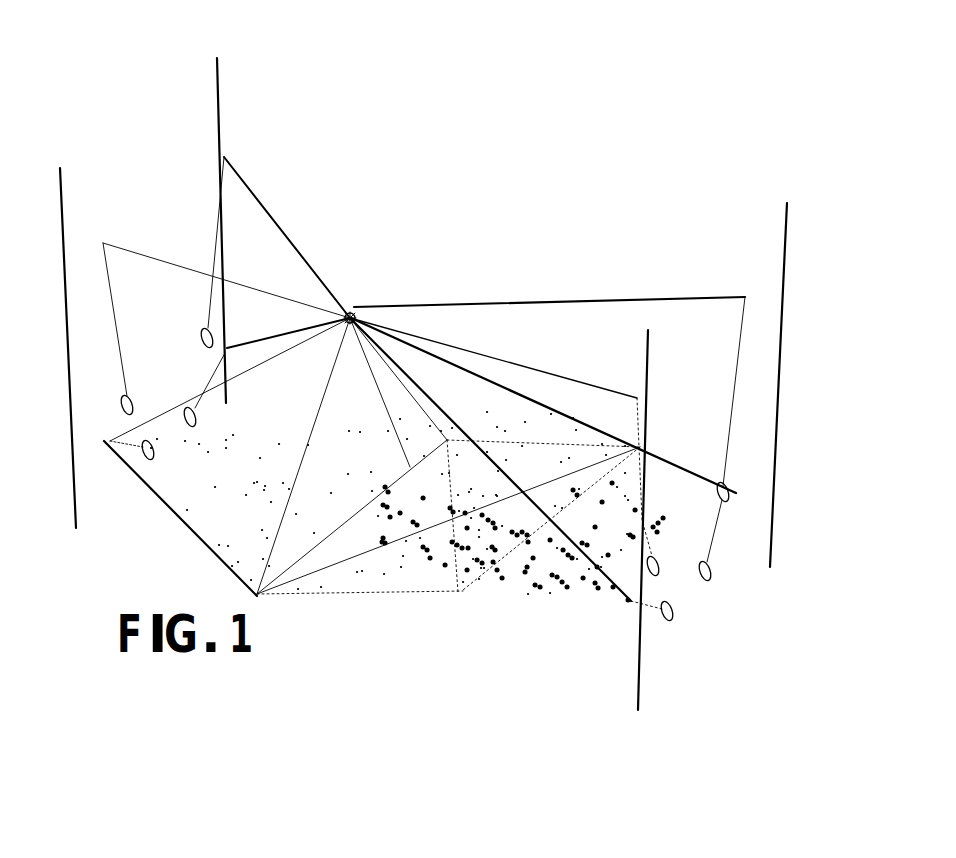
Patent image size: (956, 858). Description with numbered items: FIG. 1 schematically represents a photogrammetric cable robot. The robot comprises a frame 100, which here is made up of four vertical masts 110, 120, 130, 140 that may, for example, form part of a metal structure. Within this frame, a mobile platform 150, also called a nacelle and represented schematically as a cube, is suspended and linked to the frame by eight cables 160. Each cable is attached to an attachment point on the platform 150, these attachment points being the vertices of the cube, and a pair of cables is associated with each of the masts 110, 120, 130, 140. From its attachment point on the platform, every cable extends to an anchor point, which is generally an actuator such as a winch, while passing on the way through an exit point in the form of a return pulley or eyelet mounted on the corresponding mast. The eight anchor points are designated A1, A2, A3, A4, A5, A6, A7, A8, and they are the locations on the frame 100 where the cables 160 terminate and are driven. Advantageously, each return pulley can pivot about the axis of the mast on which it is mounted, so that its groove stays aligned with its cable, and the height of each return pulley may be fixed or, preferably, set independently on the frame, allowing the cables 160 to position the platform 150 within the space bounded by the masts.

The frame 100 is at (800, 160).
The vertical mast 110 is at (61, 333).
The vertical mast 120 is at (272, 217).
The vertical mast 130 is at (651, 507).
The vertical mast 140 is at (789, 372).
The mobile platform 150 is at (419, 422).
The cables 160 is at (488, 303).
The anchor point A1 is at (151, 445).
The anchor point A2 is at (140, 393).
The anchor point A3 is at (206, 419).
The anchor point A4 is at (191, 335).
The anchor point A5 is at (720, 543).
The anchor point A6 is at (707, 498).
The anchor point A7 is at (682, 614).
The anchor point A8 is at (667, 571).